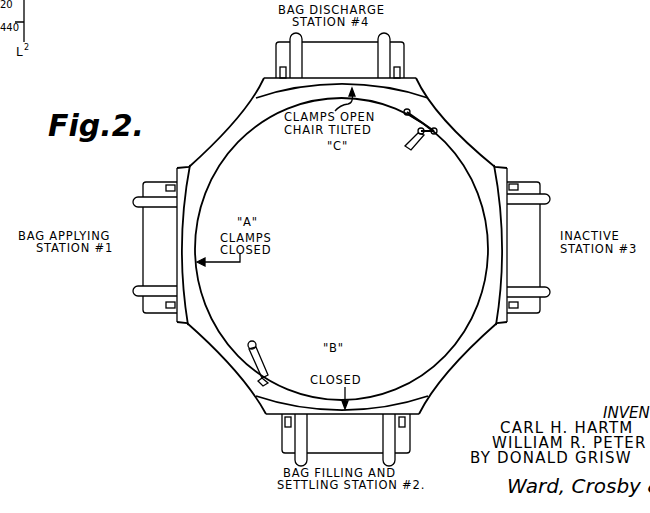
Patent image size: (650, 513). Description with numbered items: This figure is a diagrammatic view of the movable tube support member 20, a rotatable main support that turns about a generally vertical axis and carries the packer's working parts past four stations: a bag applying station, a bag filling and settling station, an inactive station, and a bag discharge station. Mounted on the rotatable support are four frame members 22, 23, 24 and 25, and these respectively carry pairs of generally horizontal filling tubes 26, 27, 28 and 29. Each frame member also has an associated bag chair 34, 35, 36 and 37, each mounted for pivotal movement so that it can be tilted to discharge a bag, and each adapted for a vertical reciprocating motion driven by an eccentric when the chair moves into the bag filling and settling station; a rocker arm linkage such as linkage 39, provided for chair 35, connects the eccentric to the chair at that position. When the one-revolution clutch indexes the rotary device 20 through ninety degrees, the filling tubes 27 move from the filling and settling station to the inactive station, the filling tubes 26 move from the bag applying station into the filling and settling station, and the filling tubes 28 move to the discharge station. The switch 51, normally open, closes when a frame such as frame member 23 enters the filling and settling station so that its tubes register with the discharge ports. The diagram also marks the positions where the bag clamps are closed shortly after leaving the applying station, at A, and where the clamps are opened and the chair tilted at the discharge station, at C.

The movable tube support member 20 is at (447, 107).
The frame member 22 is at (170, 183).
The frame member 23 is at (285, 423).
The frame member 24 is at (515, 183).
The frame member 25 is at (403, 72).
The filling tubes 26 is at (160, 200).
The filling tubes 27 is at (382, 428).
The filling tubes 28 is at (519, 205).
The filling tubes 29 is at (378, 50).
The bag chair 34 is at (143, 189).
The bag chair 35 is at (410, 435).
The bag chair 36 is at (542, 275).
The bag chair 37 is at (394, 48).
The rocker arm linkage 39 is at (606, 2).
The switch 51 is at (316, 363).